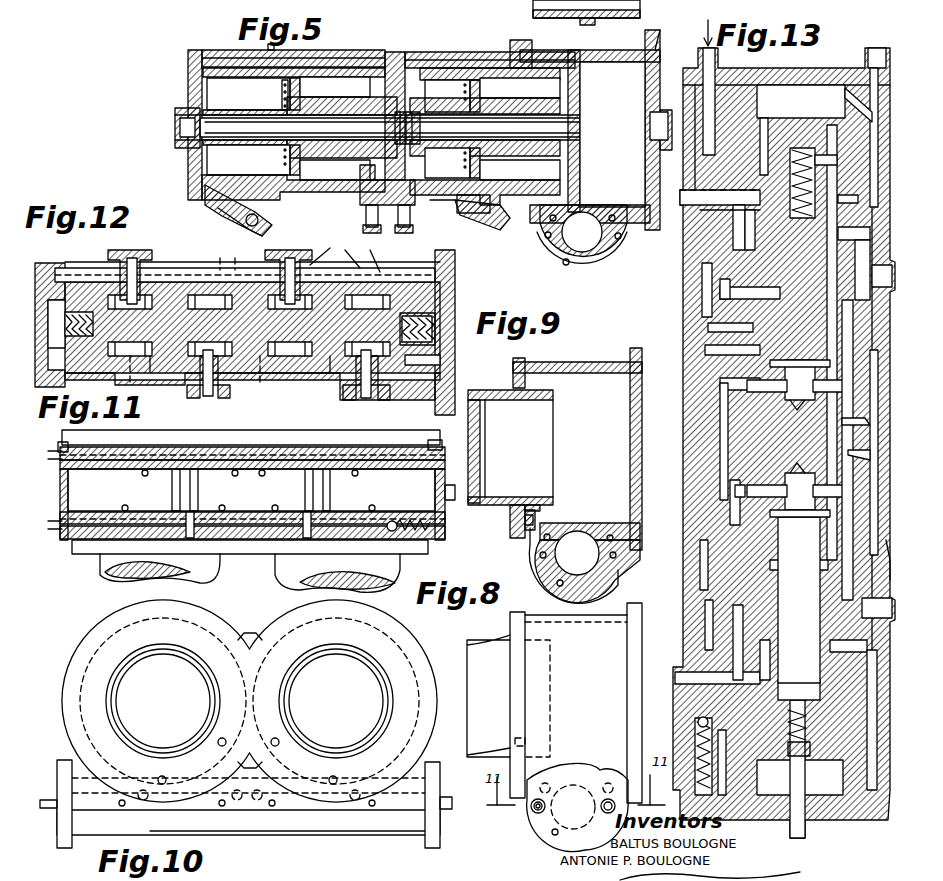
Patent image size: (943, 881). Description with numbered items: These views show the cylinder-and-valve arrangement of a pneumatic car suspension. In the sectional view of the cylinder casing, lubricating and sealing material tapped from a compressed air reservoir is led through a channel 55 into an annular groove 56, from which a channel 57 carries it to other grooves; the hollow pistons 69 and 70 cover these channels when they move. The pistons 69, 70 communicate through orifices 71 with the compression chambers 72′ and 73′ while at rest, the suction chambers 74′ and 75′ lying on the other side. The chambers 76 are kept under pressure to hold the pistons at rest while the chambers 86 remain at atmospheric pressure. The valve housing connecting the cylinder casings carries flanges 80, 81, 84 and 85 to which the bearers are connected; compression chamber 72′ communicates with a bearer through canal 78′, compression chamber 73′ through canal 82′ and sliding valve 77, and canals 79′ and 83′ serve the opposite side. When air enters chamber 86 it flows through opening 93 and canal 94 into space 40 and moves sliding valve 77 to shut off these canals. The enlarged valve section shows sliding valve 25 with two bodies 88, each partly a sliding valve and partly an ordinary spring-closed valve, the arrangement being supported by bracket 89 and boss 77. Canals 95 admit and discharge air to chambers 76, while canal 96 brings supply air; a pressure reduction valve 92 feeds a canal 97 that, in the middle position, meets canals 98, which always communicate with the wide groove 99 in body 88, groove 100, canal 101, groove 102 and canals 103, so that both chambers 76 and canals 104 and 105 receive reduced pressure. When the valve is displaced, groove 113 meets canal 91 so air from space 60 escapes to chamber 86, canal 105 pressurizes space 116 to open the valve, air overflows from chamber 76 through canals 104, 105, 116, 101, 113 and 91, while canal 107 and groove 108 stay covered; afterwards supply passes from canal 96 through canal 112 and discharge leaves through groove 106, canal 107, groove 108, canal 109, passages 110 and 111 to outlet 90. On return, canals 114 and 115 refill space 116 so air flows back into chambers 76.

In FIG. 13, the sliding valve 25 is at (860, 425).
In FIG. 12, the space 40 is at (34, 290).
In FIG. 5, the channel 55 is at (316, 62).
In FIG. 5, the annular groove 56 is at (365, 172).
In FIG. 5, the channel 57 is at (415, 57).
In FIG. 13, the space 60 is at (811, 769).
In FIG. 5, the piston 69 is at (520, 180).
In FIG. 5, the piston 70 is at (232, 185).
In FIG. 5, the orifices 71 is at (283, 156).
In FIG. 5, the compression chamber 72′ is at (495, 220).
In FIG. 5, the compression chamber 73′ is at (372, 190).
In FIG. 5, the suction chamber 74′ is at (455, 205).
In FIG. 5, the suction chamber 75′ is at (190, 188).
In FIG. 5, the chamber 76 is at (625, 60).
In FIG. 13, the chamber 76 is at (880, 590).
In FIG. 5, the sliding valve 77 is at (580, 238).
In FIG. 12, the sliding valve 77 is at (440, 300).
In FIG. 12, the canal 78′ is at (340, 385).
In FIG. 12, the canal 79′ is at (275, 384).
In FIG. 12, the flange 80 is at (385, 400).
In FIG. 12, the flange 81 is at (150, 258).
In FIG. 12, the canal 82′ is at (178, 372).
In FIG. 12, the canal 83′ is at (112, 372).
In FIG. 12, the flange 84 is at (302, 262).
In FIG. 12, the flange 85 is at (225, 398).
In FIG. 5, the chamber 86 is at (540, 50).
In FIG. 13, the chamber 86 is at (672, 203).
In FIG. 13, the body 88 is at (705, 349).
In FIG. 5, the bracket arm 89 is at (658, 38).
In FIG. 8, the outlet 90 is at (608, 798).
In FIG. 13, the outlet 90 is at (878, 20).
In FIG. 9, the canal 91 is at (535, 520).
In FIG. 13, the canal 91 is at (700, 212).
In FIG. 11, the pressure reduction valve 92 is at (395, 520).
In FIG. 13, the pressure reduction valve 92 is at (698, 720).
In FIG. 10, the opening 93 is at (220, 740).
In FIG. 8, the opening 93 is at (512, 742).
In FIG. 12, the canal 94 is at (452, 282).
In FIG. 5, the canals 95 is at (636, 208).
In FIG. 10, the canals 95 is at (162, 776).
In FIG. 9, the canals 95 is at (612, 527).
In FIG. 13, the canals 95 is at (890, 290).
In FIG. 8, the canal 96 is at (534, 808).
In FIG. 13, the canal 96 is at (702, 60).
In FIG. 8, the canal 97 is at (550, 834).
In FIG. 13, the canal 97 is at (700, 735).
In FIG. 13, the canals 98 is at (720, 295).
In FIG. 13, the groove 99 is at (720, 283).
In FIG. 13, the groove 100 is at (702, 305).
In FIG. 13, the canal 101 is at (878, 345).
In FIG. 13, the groove 102 is at (848, 200).
In FIG. 13, the canals 103 is at (858, 233).
In FIG. 9, the canal 104 is at (622, 558).
In FIG. 13, the canal 104 is at (855, 380).
In FIG. 13, the canal 105 is at (870, 455).
In FIG. 13, the groove 106 is at (838, 192).
In FIG. 13, the canal 107 is at (745, 230).
In FIG. 13, the groove 108 is at (840, 175).
In FIG. 13, the canal 109 is at (730, 160).
In FIG. 13, the groove 110 is at (845, 95).
In FIG. 13, the groove 111 is at (845, 100).
In FIG. 13, the canal 112 is at (708, 328).
In FIG. 13, the groove 113 is at (820, 160).
In FIG. 9, the canal 114 is at (530, 543).
In FIG. 13, the canal 114 is at (720, 383).
In FIG. 13, the canal 115 is at (720, 392).
In FIG. 13, the space 116 is at (797, 438).